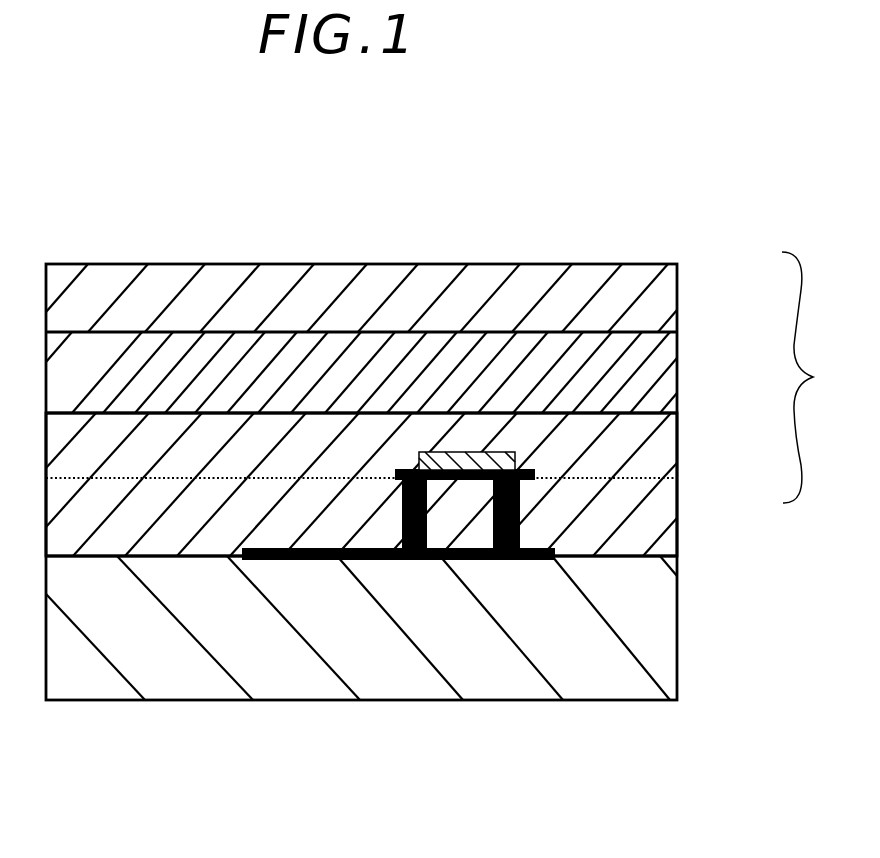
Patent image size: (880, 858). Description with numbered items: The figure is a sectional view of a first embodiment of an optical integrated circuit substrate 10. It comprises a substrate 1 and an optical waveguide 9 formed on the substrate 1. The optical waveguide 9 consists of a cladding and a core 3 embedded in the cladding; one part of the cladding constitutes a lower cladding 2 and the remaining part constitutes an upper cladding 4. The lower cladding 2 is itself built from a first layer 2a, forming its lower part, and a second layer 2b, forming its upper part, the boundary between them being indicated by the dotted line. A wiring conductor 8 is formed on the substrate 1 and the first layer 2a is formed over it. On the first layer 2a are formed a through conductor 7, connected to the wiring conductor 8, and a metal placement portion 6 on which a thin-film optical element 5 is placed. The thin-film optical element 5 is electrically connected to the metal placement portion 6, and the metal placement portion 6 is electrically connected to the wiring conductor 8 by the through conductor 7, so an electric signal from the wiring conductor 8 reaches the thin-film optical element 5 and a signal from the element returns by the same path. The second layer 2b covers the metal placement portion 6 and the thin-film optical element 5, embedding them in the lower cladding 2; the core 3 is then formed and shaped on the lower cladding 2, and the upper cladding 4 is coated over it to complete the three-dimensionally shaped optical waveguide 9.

The substrate 1 is at (630, 673).
The lower cladding 2 is at (667, 485).
The first layer 2a is at (657, 518).
The second layer 2b is at (660, 448).
The core 3 is at (647, 370).
The upper cladding 4 is at (660, 297).
The thin-film optical element 5 is at (465, 452).
The metal placement portion 6 is at (535, 478).
The through conductor 7 is at (518, 527).
The wiring conductor 8 is at (557, 562).
The optical waveguide 9 is at (809, 377).
The optical integrated circuit substrate 10 is at (651, 238).